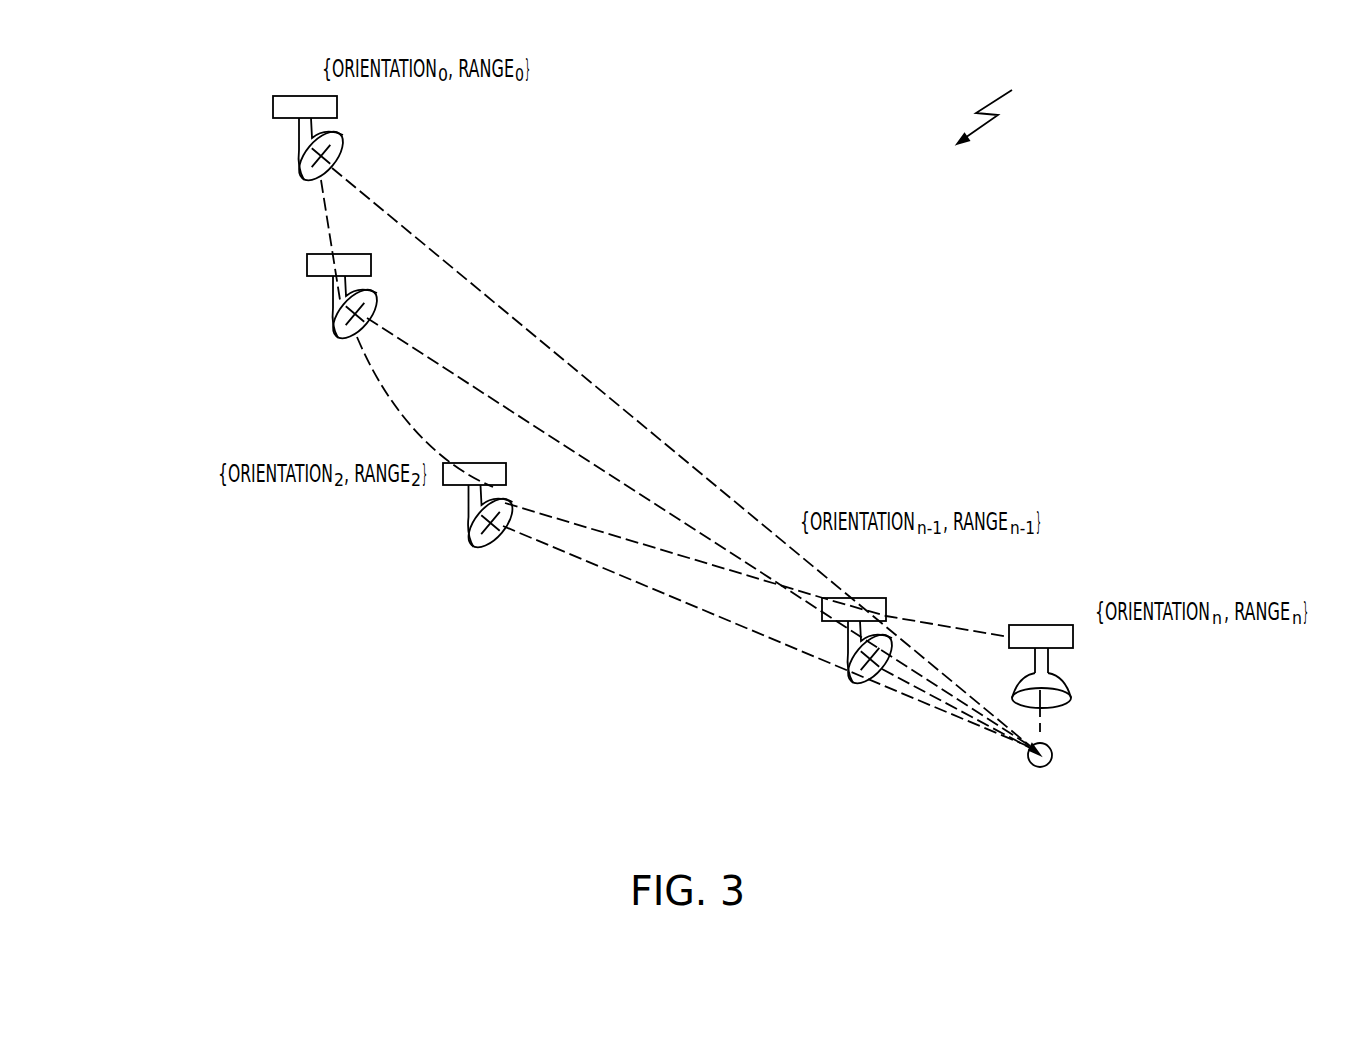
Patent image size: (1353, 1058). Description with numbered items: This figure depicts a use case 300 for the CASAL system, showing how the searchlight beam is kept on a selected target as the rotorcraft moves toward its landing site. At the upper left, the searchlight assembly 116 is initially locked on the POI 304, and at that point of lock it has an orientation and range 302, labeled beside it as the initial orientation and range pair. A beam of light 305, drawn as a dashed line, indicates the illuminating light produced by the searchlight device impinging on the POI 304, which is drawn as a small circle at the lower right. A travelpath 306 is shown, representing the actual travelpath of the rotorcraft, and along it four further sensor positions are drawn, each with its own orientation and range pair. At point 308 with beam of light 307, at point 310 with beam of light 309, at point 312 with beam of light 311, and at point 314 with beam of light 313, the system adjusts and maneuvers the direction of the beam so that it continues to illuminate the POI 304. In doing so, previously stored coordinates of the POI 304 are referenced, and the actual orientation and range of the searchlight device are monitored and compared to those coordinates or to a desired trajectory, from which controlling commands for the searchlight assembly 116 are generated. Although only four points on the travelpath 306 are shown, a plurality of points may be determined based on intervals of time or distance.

The searchlight assembly 116 is at (308, 96).
The sensor trajectory scenario 300 is at (1010, 104).
The orientation and range 302 is at (200, 214).
The POI 304 is at (1040, 768).
The beam of light 305 is at (478, 293).
The travelpath 306 is at (377, 373).
The beam of light 307 is at (430, 358).
The point 308 is at (307, 263).
The beam of light 309 is at (587, 562).
The point 310 is at (466, 463).
The beam of light 311 is at (928, 694).
The point 312 is at (857, 598).
The beam of light 313 is at (1040, 731).
The point 314 is at (1040, 625).